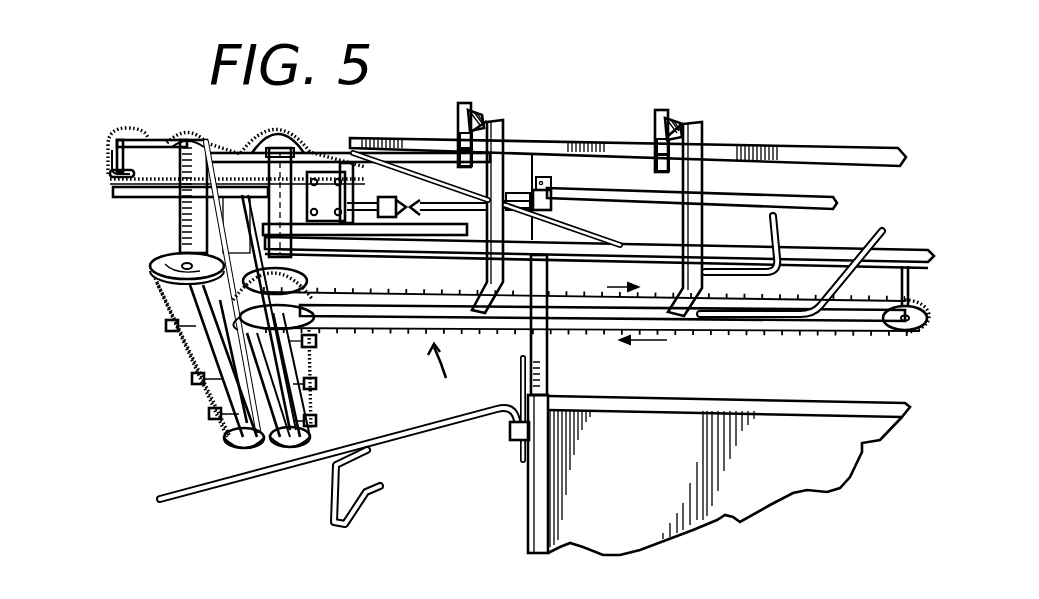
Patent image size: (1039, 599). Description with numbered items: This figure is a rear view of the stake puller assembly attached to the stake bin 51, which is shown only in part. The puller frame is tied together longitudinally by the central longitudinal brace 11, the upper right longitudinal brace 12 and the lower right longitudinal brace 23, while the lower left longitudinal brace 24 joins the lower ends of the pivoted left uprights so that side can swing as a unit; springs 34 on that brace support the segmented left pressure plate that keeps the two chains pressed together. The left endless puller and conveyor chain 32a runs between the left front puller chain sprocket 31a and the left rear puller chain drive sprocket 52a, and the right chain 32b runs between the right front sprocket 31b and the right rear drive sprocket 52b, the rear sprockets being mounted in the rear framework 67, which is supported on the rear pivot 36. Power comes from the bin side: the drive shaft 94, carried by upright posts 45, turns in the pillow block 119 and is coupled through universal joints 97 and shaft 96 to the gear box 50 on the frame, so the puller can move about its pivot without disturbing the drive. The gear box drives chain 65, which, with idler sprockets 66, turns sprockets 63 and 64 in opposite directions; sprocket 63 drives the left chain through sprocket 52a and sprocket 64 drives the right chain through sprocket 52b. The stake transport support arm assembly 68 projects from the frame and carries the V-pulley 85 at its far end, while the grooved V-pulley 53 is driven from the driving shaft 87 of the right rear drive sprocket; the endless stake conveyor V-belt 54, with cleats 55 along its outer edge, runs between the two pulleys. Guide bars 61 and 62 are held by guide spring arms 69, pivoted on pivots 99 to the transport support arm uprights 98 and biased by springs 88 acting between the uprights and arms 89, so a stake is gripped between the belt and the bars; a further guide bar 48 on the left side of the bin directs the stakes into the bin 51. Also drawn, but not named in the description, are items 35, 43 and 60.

The central longitudinal brace 11 is at (218, 225).
The upper right longitudinal brace 12 is at (228, 262).
The lower right longitudinal brace 23 is at (288, 388).
The lower left longitudinal brace 24 is at (212, 398).
The left front puller chain sprocket 31a is at (240, 447).
The right front puller chain sprocket 31b is at (308, 442).
The left endless puller and conveyor chain 32a is at (176, 364).
The right endless puller and conveyor chain 32b is at (315, 404).
The spring 34 is at (200, 342).
The clamp blocks 35 is at (192, 382).
The rear pivot 36 is at (236, 148).
The upper rail 43 is at (782, 150).
The upright posts 45 is at (546, 378).
The guide bar 48 is at (392, 437).
The gear box 50 is at (328, 178).
The bin 51 is at (528, 500).
The left rear puller chain drive sprocket 52a is at (152, 262).
The right rear puller chain drive sprocket 52b is at (314, 276).
The grooved V-pulley 53 is at (313, 318).
The endless stake conveyor V-belt 54 is at (412, 332).
The projections or cleats 55 is at (440, 290).
The conveyor assembly 60 is at (440, 374).
The guide bar 61 is at (780, 238).
The guide bar 62 is at (866, 232).
The sprocket 63 is at (182, 133).
The sprocket 64 is at (276, 140).
The chain 65 is at (296, 150).
The idler sprockets 66 is at (108, 158).
The framework 67 is at (180, 230).
The stake transport support arm assembly 68 is at (598, 240).
The guide spring arms 69 is at (503, 128).
The V-pulley 85 is at (903, 332).
The driving shaft 87 is at (382, 196).
The springs 88 is at (476, 112).
The arms 89 is at (466, 112).
The drive shaft 94 is at (716, 200).
The shaft 96 is at (437, 202).
The universal joints 97 is at (520, 190).
The transport support arm uprights 98 is at (655, 186).
The pivots 99 is at (458, 140).
The pillow block 119 is at (558, 196).